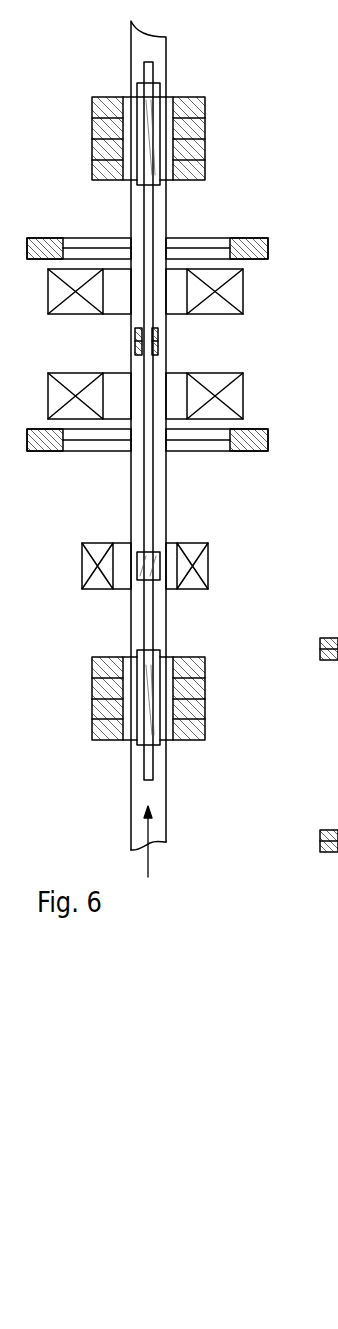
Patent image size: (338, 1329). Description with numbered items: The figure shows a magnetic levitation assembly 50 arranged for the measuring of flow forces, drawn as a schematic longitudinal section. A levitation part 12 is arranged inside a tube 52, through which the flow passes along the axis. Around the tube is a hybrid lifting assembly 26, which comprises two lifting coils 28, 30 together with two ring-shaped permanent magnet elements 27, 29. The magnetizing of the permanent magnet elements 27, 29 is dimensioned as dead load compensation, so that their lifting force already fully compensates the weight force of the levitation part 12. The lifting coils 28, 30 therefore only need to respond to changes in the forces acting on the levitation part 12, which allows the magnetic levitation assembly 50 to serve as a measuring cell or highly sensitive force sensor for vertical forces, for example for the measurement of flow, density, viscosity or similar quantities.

The levitation part 12 is at (170, 193).
The lifting assembly 26 is at (179, 360).
The permanent magnet element 27 is at (252, 449).
The lifting coil 28 is at (243, 402).
The permanent magnet element 29 is at (245, 243).
The lifting coil 30 is at (243, 296).
The magnetic levitation assembly 50 is at (268, 117).
The tube 52 is at (170, 47).